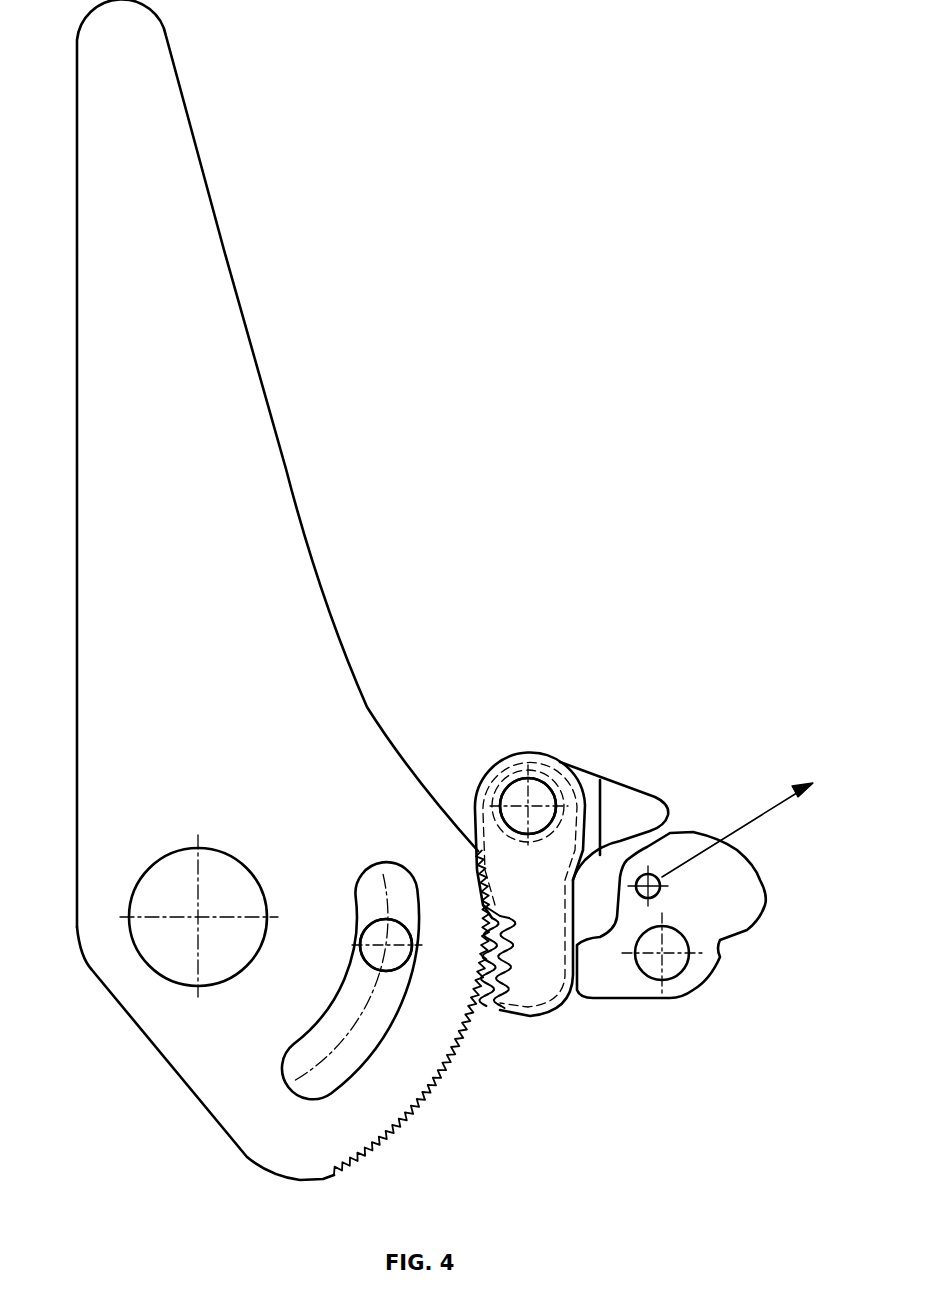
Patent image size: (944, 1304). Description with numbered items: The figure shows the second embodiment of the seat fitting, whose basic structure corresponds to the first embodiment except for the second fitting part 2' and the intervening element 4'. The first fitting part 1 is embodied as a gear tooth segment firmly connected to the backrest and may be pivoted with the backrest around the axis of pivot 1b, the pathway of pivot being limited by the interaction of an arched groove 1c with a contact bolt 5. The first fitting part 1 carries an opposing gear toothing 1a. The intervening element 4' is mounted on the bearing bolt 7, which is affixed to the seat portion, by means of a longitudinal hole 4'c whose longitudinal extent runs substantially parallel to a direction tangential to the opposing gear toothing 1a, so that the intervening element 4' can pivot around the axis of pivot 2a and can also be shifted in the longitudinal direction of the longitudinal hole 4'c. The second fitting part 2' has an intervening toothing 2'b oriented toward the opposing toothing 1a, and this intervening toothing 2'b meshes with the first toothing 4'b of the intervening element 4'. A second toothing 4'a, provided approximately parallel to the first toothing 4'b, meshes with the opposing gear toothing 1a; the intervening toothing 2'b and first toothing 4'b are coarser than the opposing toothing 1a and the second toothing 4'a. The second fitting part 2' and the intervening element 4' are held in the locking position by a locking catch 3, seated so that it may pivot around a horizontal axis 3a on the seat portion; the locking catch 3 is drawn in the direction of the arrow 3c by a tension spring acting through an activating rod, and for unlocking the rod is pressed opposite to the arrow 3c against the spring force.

The first fitting part 1 is at (288, 469).
The opposing gear toothing 1a is at (368, 1163).
The axis of pivot 1b is at (198, 917).
The arched groove 1c is at (360, 1058).
The contact bolt 5 is at (395, 917).
The second fitting part 2' is at (530, 898).
The intervening toothing 2'b is at (418, 945).
The axis of pivot 2a is at (566, 762).
The bearing bolt 7 is at (502, 797).
The intervening element 4' is at (568, 904).
The second toothing 4'a is at (459, 962).
The first toothing 4'b is at (526, 996).
The longitudinal hole 4'c is at (508, 876).
The locking catch 3 is at (752, 862).
The horizontal axis 3a is at (680, 978).
The arrow 3c is at (780, 792).